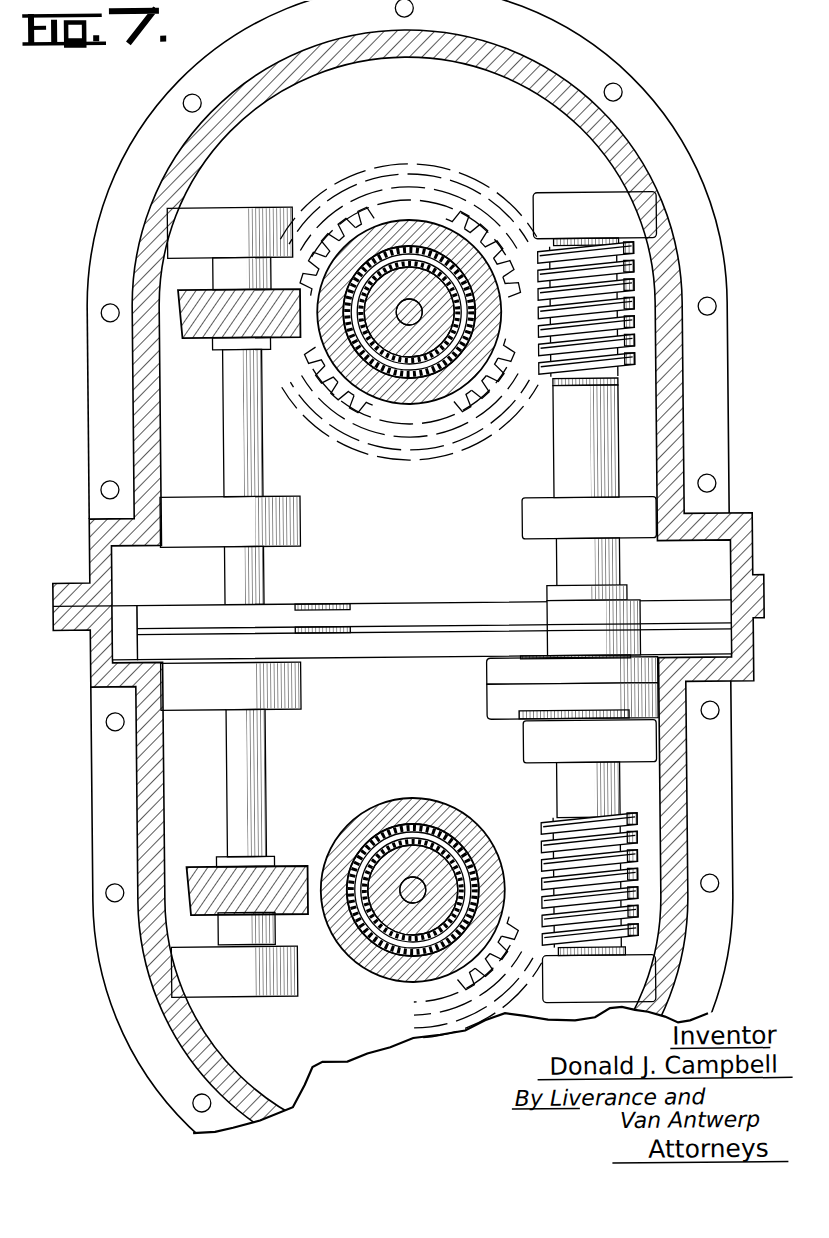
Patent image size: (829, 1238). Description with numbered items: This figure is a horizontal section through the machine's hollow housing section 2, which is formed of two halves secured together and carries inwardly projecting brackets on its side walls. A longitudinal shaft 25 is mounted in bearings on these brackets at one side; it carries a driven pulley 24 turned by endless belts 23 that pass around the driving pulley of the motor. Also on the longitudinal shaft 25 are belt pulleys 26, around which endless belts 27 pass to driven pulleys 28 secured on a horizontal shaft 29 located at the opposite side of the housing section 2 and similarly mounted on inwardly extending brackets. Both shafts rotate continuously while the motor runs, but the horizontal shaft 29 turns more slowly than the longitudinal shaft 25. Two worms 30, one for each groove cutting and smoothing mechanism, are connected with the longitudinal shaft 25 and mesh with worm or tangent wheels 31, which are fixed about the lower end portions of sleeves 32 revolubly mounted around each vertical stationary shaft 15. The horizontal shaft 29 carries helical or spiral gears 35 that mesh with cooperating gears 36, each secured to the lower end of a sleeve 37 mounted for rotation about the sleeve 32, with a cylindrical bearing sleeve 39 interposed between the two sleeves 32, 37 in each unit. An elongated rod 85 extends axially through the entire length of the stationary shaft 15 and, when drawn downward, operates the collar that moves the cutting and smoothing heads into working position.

The section 2 is at (563, 83).
The vertical stationary shaft 15 is at (430, 285).
The endless belts 23 is at (499, 698).
The driven pulley 24 is at (636, 709).
The longitudinal shaft 25 is at (574, 440).
The belt pulleys 26 is at (630, 605).
The endless belts 27 is at (450, 620).
The driven pulleys 28 is at (333, 602).
The horizontal shaft 29 is at (239, 408).
The worms 30 is at (608, 295).
The worm or tangent wheels 31 is at (529, 388).
The sleeves 32 is at (414, 367).
The helical or spiral gears 35 is at (201, 321).
The cooperating gears 36 is at (317, 384).
The sleeves 37 is at (463, 253).
The cylindrical bearing sleeve 39 is at (435, 378).
The elongated rod 85 is at (406, 323).